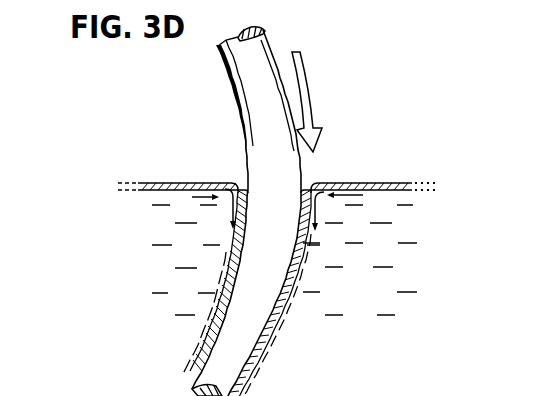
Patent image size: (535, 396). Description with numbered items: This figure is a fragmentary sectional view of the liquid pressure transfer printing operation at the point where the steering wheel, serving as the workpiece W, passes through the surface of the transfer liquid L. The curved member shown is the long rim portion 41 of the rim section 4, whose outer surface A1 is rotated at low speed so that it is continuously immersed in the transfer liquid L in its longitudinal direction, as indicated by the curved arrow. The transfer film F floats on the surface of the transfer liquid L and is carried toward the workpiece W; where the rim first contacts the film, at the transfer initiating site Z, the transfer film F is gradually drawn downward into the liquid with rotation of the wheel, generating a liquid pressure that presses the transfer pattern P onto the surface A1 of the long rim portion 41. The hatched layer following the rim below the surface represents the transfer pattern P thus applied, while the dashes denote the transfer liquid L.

The long rim portion 41 is at (243, 82).
The rim section 4 is at (220, 71).
The surface of substrate A1 is at (254, 125).
The workpiece W is at (200, 146).
The transfer film F is at (157, 183).
The transfer pattern P is at (188, 181).
The transfer initiating site Z is at (311, 172).
The transfer liquid L is at (369, 290).